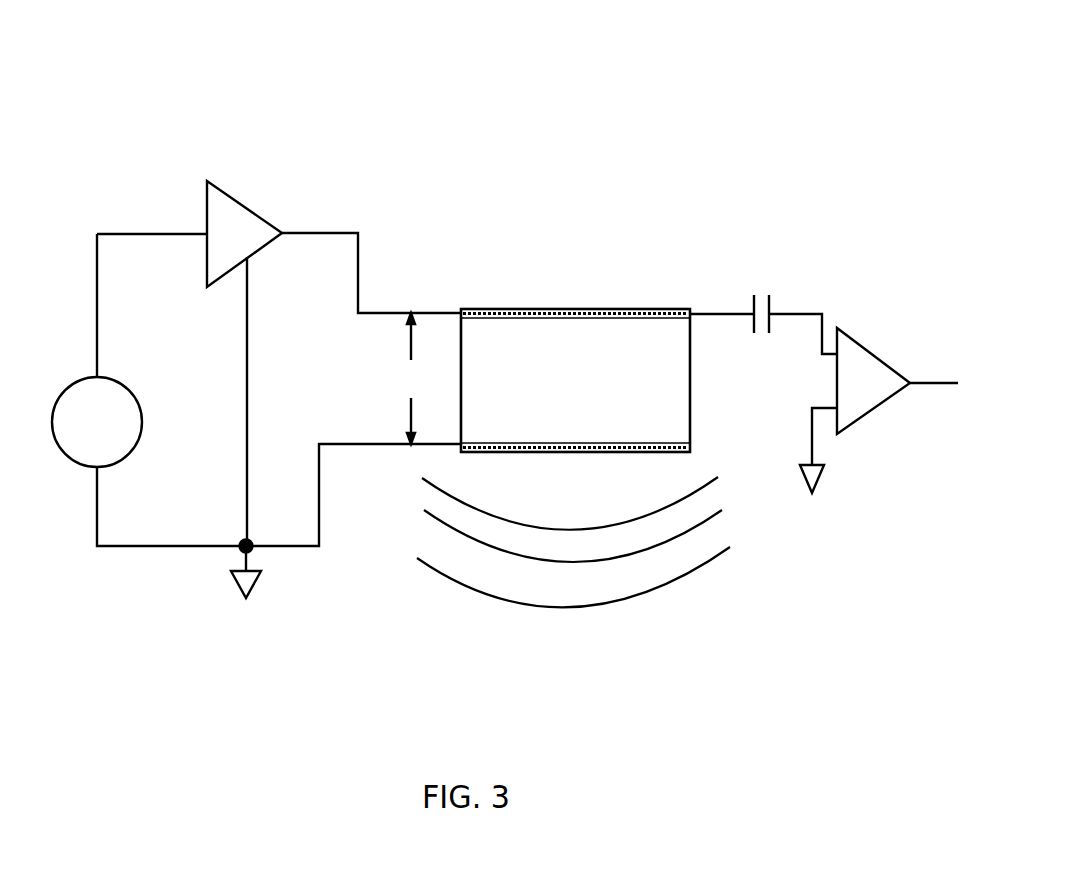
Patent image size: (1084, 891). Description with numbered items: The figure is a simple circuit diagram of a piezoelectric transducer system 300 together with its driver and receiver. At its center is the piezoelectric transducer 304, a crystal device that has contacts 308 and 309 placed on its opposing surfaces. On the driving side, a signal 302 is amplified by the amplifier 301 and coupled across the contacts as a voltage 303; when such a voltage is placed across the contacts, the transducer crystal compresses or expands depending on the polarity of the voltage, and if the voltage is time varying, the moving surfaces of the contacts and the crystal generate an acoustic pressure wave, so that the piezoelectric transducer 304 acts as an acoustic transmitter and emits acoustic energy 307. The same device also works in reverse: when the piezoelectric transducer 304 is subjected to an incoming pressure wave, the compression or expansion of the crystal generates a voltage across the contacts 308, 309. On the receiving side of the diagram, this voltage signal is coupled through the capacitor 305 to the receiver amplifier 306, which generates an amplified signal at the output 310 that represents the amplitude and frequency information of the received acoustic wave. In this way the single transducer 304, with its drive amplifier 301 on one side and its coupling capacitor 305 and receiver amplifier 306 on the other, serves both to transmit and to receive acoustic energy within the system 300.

The piezoelectric transducer system 300 is at (458, 93).
The amplifier 301 is at (256, 213).
The signal 302 is at (116, 383).
The voltage 303 is at (410, 347).
The piezoelectric transducer 304 is at (607, 370).
The capacitor 305 is at (772, 285).
The receiver amplifier 306 is at (867, 345).
The acoustic energy 307 is at (593, 562).
The contact 308 is at (520, 308).
The contact 309 is at (633, 452).
The output 310 is at (940, 385).